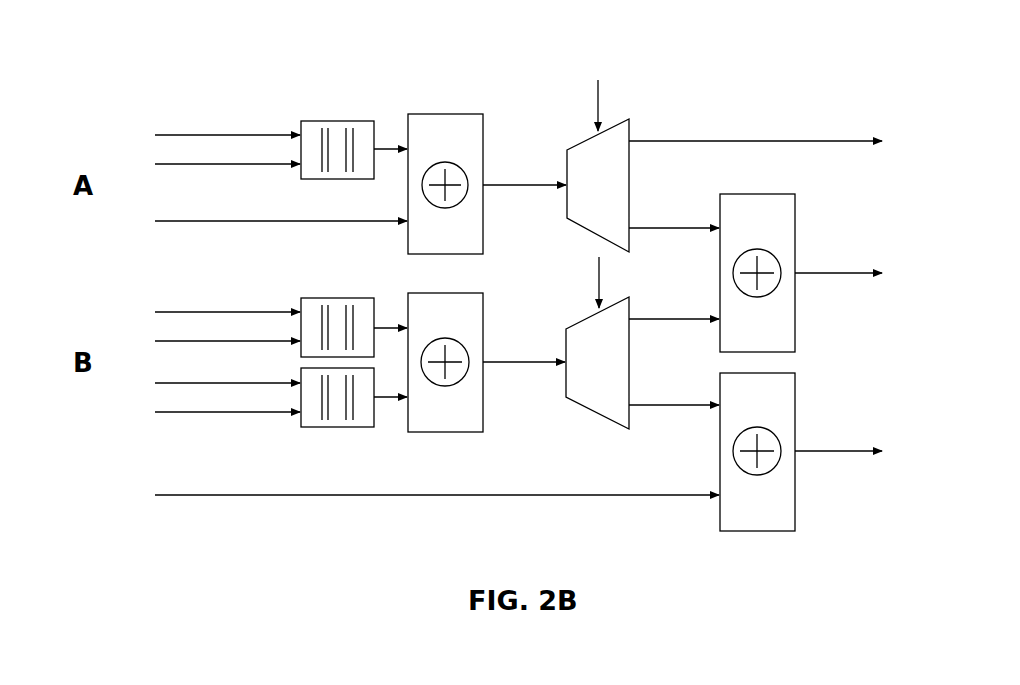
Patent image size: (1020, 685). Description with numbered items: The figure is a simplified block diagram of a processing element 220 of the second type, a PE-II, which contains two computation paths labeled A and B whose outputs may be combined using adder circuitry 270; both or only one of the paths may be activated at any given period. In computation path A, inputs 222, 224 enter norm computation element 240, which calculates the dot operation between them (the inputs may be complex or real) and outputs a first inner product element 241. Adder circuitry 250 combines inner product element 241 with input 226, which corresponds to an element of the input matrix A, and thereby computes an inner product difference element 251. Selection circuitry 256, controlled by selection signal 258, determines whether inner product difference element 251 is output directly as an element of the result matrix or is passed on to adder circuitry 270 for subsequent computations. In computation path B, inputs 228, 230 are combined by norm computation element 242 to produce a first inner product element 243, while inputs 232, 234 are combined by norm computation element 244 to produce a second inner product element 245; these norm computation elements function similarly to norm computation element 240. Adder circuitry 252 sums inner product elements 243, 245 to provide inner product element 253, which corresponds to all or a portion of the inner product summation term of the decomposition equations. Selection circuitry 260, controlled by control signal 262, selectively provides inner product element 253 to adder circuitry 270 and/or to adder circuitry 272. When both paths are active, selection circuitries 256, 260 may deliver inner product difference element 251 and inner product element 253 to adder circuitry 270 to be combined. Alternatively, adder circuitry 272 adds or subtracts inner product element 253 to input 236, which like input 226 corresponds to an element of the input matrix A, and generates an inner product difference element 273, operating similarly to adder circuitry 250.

The processing element 220 is at (148, 48).
The input 222 is at (231, 134).
The input 224 is at (231, 166).
The input 226 is at (231, 222).
The input 228 is at (231, 311).
The input 230 is at (231, 340).
The input 232 is at (231, 382).
The input 234 is at (231, 411).
The input 236 is at (440, 497).
The norm computation element 240 is at (338, 121).
The first inner product element 241 is at (386, 148).
The norm computation element 242 is at (338, 298).
The first inner product element 243 is at (386, 327).
The norm computation element 244 is at (338, 427).
The second inner product element 245 is at (385, 398).
The adder circuitry 250 is at (448, 114).
The inner product difference element 251 is at (528, 184).
The adder circuitry 252 is at (448, 293).
The inner product element 253 is at (528, 361).
The selection circuitry 256 is at (576, 150).
The selection signal 258 is at (604, 108).
The selection circuitry 260 is at (576, 329).
The control signal 262 is at (604, 284).
The adder circuitry 270 is at (758, 194).
The adder circuitry 272 is at (758, 531).
The inner product difference element 273 is at (838, 450).